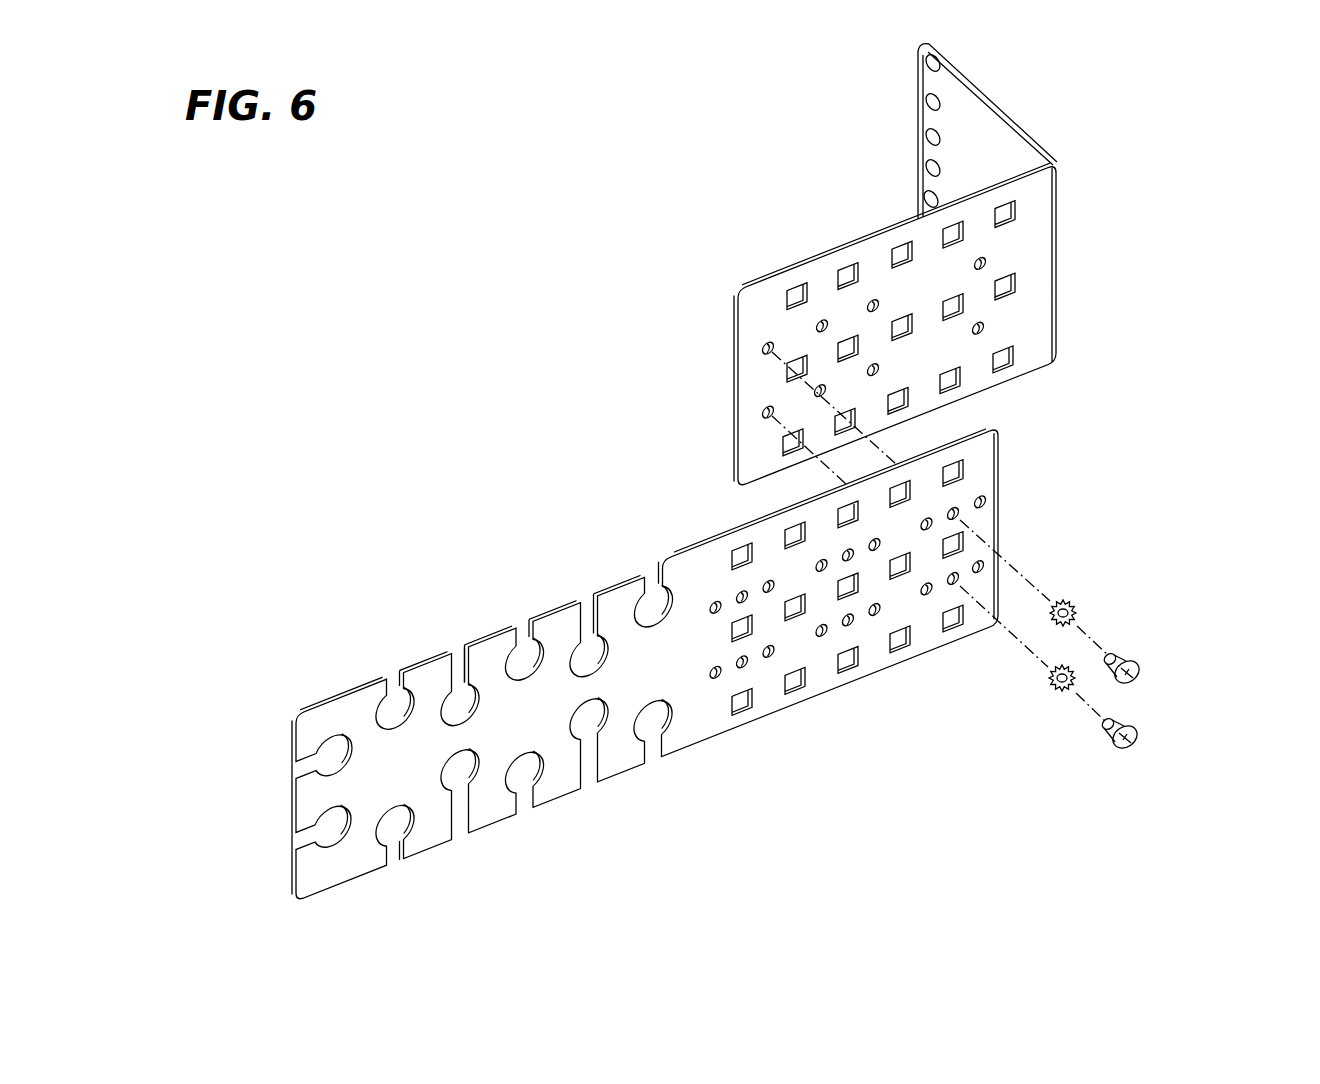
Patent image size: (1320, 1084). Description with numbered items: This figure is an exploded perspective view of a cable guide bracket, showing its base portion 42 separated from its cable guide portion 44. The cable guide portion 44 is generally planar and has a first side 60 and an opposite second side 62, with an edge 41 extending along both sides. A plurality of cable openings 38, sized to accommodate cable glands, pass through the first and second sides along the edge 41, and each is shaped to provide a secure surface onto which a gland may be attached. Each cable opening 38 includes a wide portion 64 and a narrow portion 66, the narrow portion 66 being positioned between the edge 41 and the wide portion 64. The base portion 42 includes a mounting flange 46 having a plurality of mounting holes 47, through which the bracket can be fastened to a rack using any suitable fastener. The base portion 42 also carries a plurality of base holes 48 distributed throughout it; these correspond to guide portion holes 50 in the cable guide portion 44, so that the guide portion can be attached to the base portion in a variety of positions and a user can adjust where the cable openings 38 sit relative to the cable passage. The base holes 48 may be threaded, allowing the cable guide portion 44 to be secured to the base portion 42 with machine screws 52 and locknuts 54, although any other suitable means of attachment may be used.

The cable opening 38 is at (396, 706).
The edge 41 is at (498, 820).
The base portion 42 is at (1030, 244).
The cable guide portion 44 is at (700, 727).
The mounting flange 46 is at (1000, 145).
The mounting hole 47 is at (928, 168).
The base hole 48 is at (877, 370).
The guide portion hole 50 is at (987, 572).
The machine screw 52 is at (1120, 658).
The locknut 54 is at (1077, 610).
The first side 60 is at (320, 873).
The second side 62 is at (672, 549).
The wide portion 64 is at (395, 827).
The narrow portion 66 is at (393, 855).